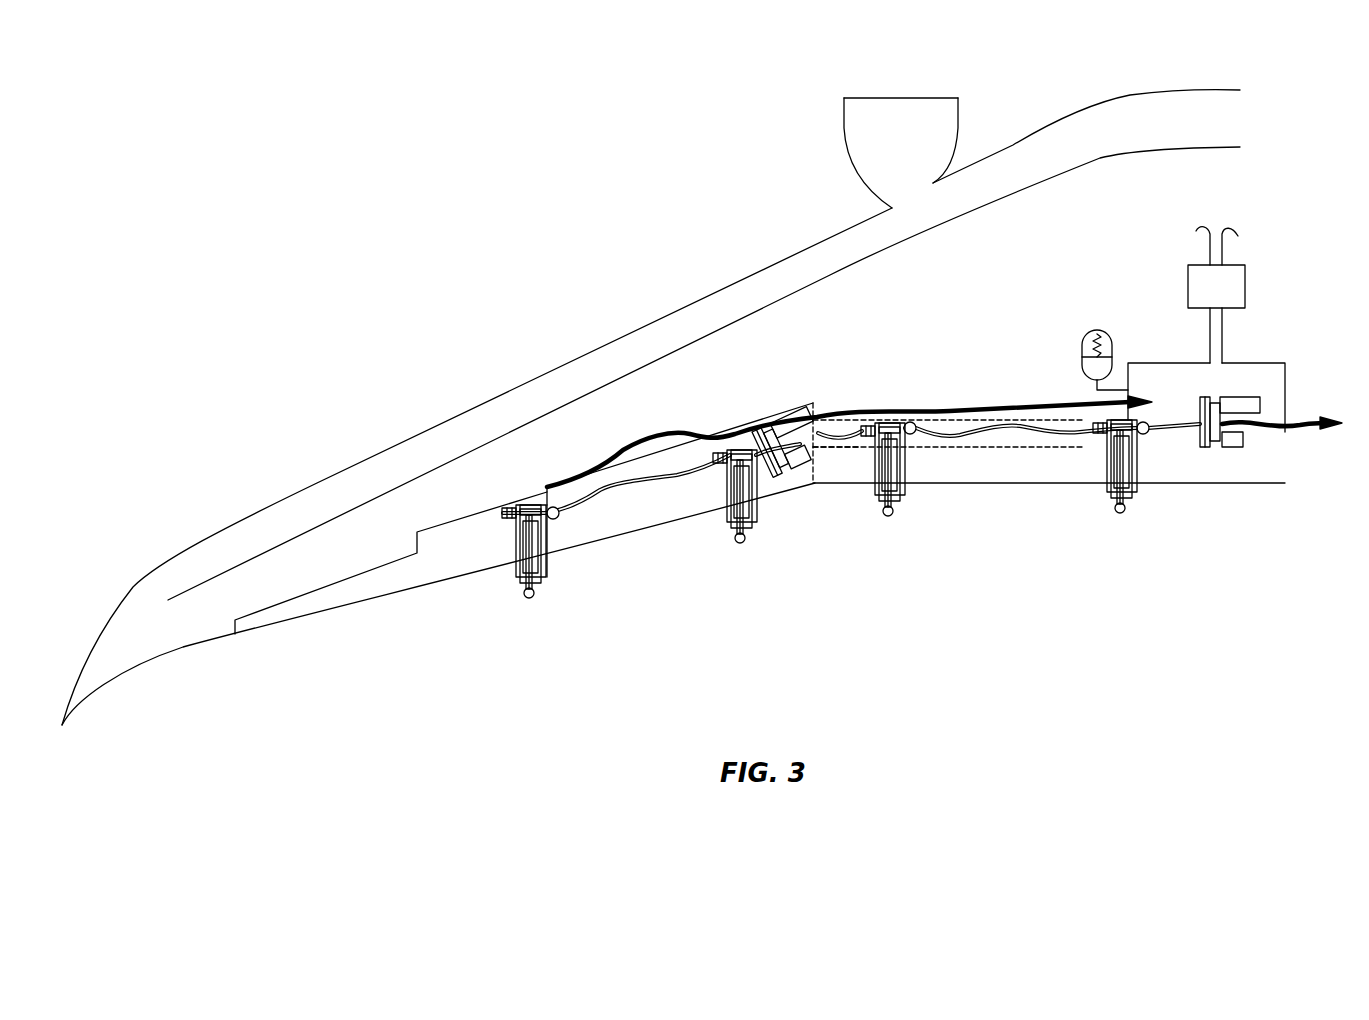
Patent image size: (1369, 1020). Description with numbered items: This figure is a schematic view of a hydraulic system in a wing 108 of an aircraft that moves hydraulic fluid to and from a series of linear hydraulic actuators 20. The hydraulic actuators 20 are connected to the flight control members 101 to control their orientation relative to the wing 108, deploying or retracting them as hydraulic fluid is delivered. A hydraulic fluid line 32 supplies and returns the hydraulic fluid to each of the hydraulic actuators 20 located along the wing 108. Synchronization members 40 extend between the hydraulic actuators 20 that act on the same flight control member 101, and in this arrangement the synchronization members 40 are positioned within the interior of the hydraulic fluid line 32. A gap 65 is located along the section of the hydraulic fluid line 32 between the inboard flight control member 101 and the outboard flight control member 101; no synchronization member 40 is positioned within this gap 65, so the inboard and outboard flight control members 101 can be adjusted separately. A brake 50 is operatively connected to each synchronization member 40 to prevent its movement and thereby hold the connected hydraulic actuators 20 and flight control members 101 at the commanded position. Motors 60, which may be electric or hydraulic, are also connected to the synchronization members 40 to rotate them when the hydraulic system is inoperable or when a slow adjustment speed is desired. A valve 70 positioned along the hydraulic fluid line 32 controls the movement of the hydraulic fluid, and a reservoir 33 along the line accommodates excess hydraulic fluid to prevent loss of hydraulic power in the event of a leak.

The wing 108 is at (417, 457).
The flight control member 101 is at (578, 530).
The hydraulic fluid line 32 is at (643, 442).
The synchronization member 40 is at (660, 482).
The hydraulic actuator 20 is at (517, 572).
The brake 50 is at (792, 435).
The motor 60 is at (801, 478).
The gap 65 is at (837, 468).
The reservoir 33 is at (1087, 337).
The valve 70 is at (1228, 298).